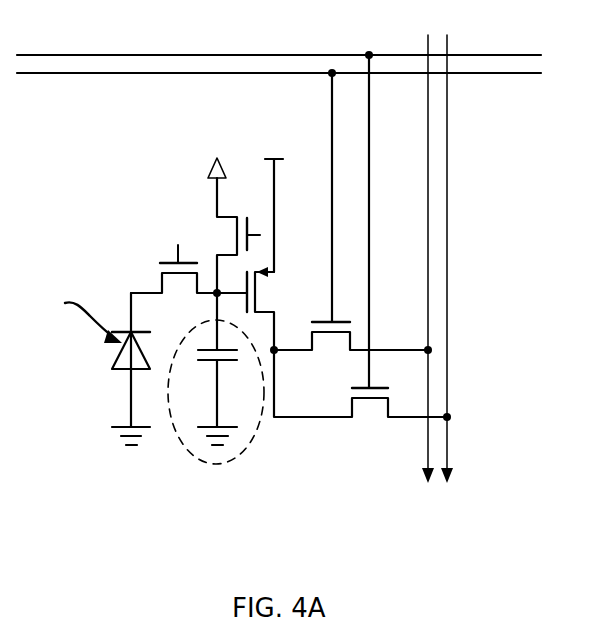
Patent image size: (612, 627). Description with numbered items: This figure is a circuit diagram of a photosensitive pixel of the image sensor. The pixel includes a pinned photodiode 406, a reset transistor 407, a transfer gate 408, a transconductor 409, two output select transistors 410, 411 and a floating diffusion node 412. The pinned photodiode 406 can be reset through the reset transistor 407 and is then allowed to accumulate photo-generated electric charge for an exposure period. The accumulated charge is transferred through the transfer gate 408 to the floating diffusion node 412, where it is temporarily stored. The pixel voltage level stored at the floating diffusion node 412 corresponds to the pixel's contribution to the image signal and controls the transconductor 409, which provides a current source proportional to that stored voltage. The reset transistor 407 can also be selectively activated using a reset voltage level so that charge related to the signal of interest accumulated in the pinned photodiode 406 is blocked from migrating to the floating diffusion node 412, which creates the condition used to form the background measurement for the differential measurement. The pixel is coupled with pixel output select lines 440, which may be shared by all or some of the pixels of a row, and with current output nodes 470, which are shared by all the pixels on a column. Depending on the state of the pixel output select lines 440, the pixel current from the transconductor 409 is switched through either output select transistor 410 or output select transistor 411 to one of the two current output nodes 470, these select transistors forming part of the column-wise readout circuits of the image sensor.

The pinned photodiode 406 is at (112, 369).
The reset transistor 407 is at (233, 235).
The transfer gate 408 is at (177, 268).
The transconductor 409 is at (268, 292).
The output select transistor 410 is at (331, 334).
The output select transistor 411 is at (368, 400).
The floating diffusion node 412 is at (217, 300).
The pixel output select lines 440 is at (486, 63).
The current output nodes 470 is at (437, 235).